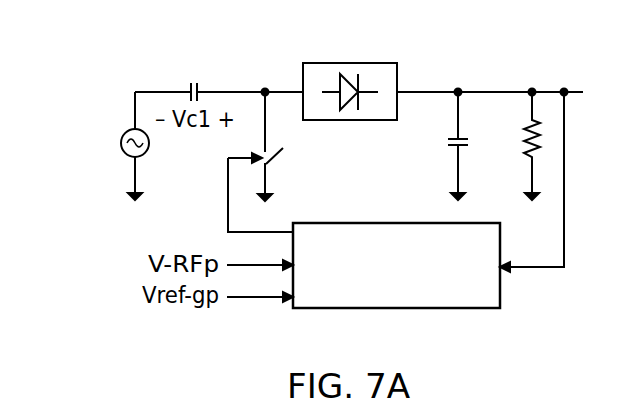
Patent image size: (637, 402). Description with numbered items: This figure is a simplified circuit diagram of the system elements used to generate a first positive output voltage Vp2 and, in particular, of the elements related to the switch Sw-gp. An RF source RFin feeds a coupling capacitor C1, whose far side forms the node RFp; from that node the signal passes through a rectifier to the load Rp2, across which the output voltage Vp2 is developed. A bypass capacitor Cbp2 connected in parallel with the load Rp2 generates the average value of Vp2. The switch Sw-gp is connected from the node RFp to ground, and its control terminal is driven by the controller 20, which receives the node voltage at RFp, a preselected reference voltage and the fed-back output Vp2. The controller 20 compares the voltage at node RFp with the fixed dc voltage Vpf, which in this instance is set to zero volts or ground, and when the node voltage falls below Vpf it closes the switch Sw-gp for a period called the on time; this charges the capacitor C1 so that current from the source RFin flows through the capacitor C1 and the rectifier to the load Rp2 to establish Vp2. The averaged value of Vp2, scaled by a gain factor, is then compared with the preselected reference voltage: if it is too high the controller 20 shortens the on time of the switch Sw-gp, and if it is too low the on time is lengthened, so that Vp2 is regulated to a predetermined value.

The controller 20 is at (470, 261).
The capacitor C1 is at (190, 83).
The source RFin is at (103, 146).
The RFp node RFp is at (262, 74).
The switch Sw-gp is at (270, 165).
The fixed dc voltage Vpf is at (281, 189).
The bypass capacitor Cbp2 is at (424, 145).
The load Rp2 is at (525, 130).
The output voltage Vp2 is at (567, 176).